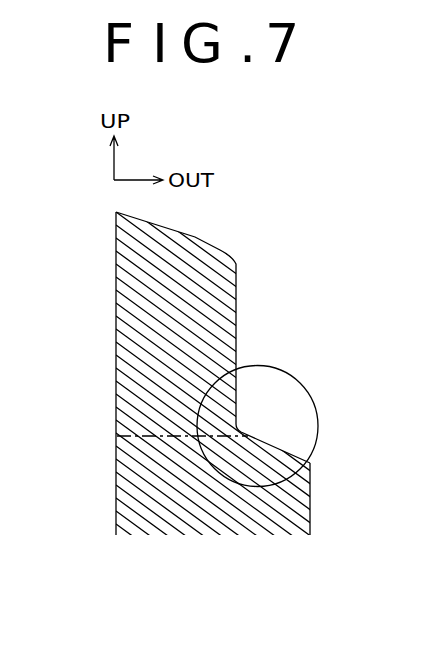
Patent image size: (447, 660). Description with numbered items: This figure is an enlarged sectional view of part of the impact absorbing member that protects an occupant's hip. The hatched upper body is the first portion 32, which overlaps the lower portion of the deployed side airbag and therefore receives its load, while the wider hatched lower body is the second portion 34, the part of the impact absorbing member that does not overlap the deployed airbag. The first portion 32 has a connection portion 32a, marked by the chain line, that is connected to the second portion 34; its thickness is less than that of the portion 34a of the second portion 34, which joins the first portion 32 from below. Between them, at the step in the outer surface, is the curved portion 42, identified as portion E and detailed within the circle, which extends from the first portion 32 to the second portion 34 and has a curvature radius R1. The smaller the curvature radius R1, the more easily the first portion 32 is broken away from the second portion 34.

The first portion 32 is at (237, 296).
The connection portion 32a is at (146, 428).
The second portion 34 is at (302, 503).
The portion of the second portion 34a is at (146, 489).
The curved portion 42 is at (274, 451).
The portion E is at (313, 410).
The curvature radius R1 is at (291, 392).